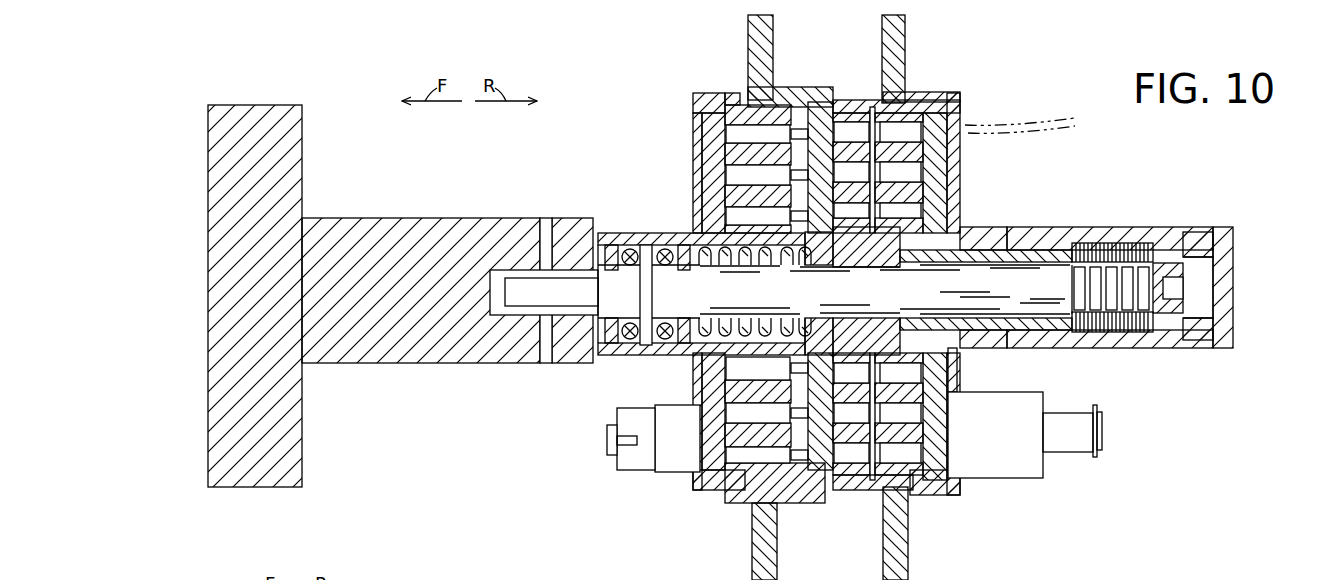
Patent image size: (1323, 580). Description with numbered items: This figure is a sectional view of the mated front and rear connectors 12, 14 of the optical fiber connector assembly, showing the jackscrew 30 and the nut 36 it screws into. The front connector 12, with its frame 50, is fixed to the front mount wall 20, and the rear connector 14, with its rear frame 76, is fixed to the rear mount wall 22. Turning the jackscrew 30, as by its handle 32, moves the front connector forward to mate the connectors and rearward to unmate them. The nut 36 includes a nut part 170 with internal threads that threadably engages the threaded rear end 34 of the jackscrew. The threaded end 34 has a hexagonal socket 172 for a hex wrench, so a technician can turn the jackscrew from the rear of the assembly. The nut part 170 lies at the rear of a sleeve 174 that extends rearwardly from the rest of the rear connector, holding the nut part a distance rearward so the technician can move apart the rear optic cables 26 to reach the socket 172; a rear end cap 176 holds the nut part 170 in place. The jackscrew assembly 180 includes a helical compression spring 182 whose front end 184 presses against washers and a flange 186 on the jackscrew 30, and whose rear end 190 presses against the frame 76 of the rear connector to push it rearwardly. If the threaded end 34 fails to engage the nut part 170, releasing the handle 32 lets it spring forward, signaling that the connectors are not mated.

The front connector 12 is at (854, 273).
The rear connector 14 is at (1020, 87).
The front mount wall 20 is at (748, 40).
The rear mount wall 22 is at (908, 32).
The rear optic cables 26 is at (1010, 120).
The jackscrew 30 is at (432, 218).
The handle 32 is at (302, 437).
The threaded rear end 34 is at (1130, 270).
The threaded nut part 36 is at (1000, 251).
The frame 50 is at (789, 82).
The rear frame 76 is at (915, 100).
The nut part 170 is at (1085, 243).
The hexagonal socket 172 is at (1185, 285).
The sleeve 174 is at (990, 226).
The rear end cap 176 is at (1222, 227).
The jackscrew assembly 180 is at (523, 196).
The helical compression spring 182 is at (700, 247).
The front end 184 is at (687, 289).
The flange 186 is at (638, 345).
The rear end 190 is at (727, 176).